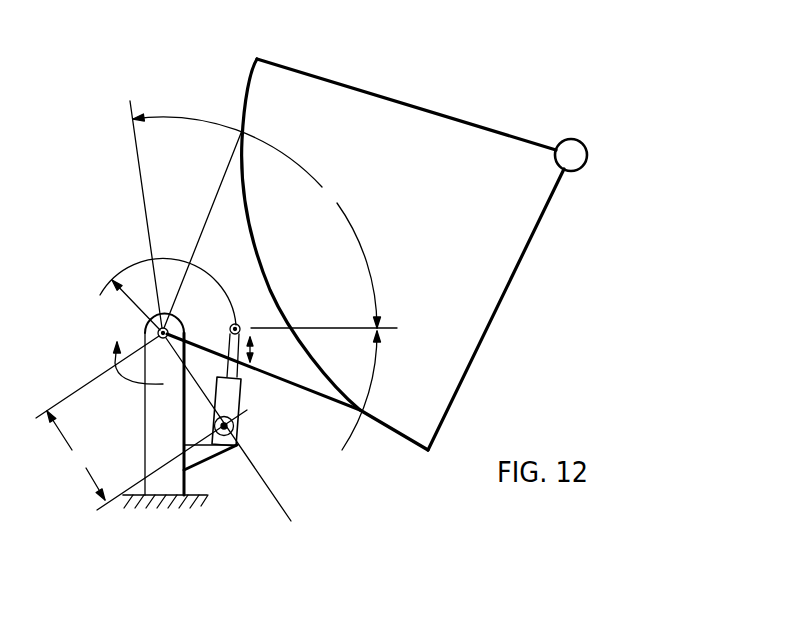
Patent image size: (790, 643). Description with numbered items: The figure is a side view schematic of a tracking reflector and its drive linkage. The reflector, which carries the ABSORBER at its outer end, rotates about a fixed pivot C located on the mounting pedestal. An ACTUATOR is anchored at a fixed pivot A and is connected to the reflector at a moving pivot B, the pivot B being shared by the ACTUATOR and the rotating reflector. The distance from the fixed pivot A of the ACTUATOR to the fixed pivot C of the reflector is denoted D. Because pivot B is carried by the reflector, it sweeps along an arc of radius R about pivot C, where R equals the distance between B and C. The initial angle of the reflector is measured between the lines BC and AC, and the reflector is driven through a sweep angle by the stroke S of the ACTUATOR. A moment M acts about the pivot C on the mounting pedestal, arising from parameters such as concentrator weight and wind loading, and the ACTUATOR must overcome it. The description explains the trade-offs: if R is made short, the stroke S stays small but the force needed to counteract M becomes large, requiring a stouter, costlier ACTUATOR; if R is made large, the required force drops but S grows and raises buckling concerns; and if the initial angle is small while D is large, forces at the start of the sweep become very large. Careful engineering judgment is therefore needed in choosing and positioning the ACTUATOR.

The fixed pivot of the rotating reflector C is at (152, 330).
The radius of sweep of pivot B R is at (134, 307).
The moving pivot B is at (240, 323).
The stroke of the actuator S is at (257, 350).
The fixed pivot of the actuator A is at (234, 431).
The distance from the fixed pivot A to the fixed pivot C D is at (76, 455).
The moment applied about the pivot C M is at (119, 382).
The absorber ABSORBER is at (567, 140).
The actuator ACTUATOR is at (225, 452).